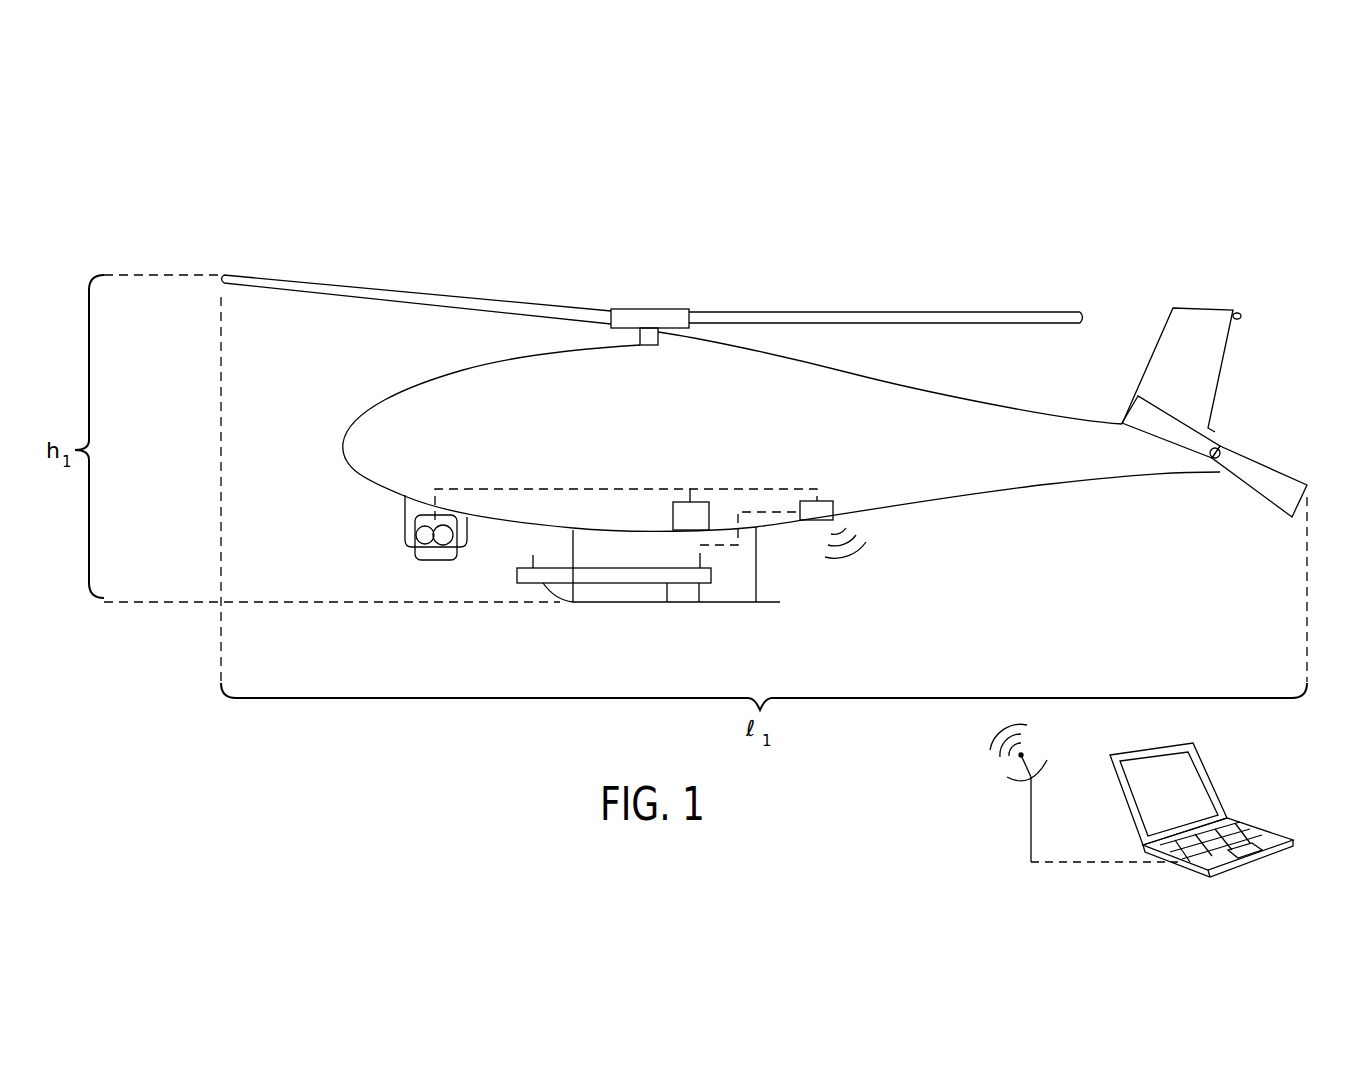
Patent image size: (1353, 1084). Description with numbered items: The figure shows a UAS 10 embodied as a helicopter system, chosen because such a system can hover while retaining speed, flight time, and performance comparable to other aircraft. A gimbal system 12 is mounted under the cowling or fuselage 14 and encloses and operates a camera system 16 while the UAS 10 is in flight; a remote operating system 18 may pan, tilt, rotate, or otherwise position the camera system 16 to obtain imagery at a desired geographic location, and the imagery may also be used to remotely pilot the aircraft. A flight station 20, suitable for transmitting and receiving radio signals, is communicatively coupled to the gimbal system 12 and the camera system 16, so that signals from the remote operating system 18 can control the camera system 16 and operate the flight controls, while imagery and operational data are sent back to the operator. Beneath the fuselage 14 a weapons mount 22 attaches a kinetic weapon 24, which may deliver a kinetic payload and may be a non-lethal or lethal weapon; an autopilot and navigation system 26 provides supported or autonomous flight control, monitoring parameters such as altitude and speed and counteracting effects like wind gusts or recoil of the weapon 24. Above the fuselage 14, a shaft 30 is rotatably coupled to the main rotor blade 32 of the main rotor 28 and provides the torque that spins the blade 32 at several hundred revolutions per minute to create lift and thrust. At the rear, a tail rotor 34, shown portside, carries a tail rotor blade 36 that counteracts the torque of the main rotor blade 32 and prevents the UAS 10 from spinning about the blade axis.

The UAS 10 is at (1243, 188).
The gimbal system 12 is at (405, 522).
The fuselage 14 is at (663, 456).
The camera system 16 is at (443, 546).
The remote operating system 18 is at (822, 506).
The flight station 20 is at (1282, 802).
The weapons mount 22 is at (687, 595).
The kinetic weapon 24 is at (627, 576).
The autopilot and navigation system 26 is at (673, 515).
The main rotor 28 is at (650, 310).
The shaft 30 is at (650, 338).
The main rotor blade 32 is at (430, 294).
The tail rotor 34 is at (1220, 445).
The tail rotor blade 36 is at (1152, 418).